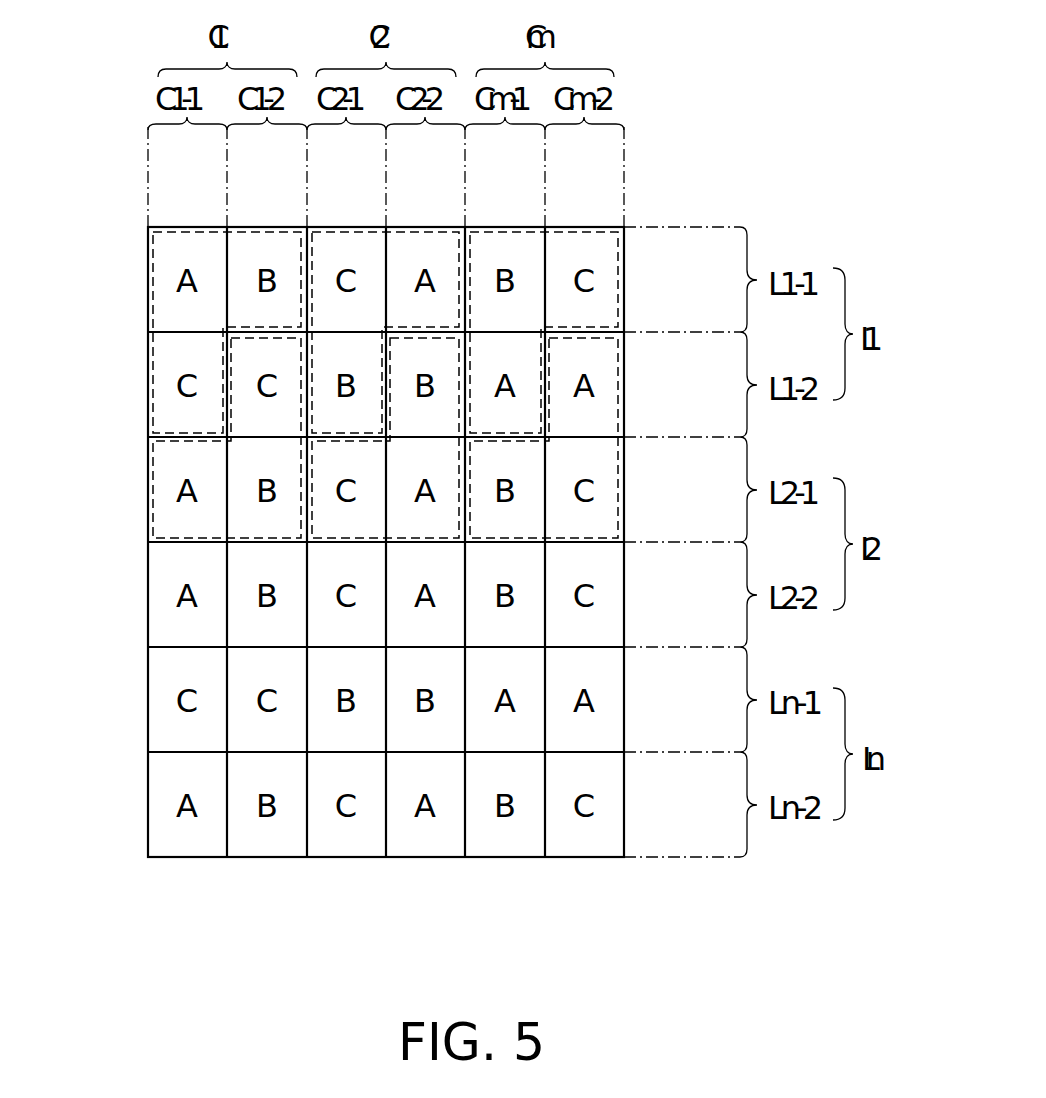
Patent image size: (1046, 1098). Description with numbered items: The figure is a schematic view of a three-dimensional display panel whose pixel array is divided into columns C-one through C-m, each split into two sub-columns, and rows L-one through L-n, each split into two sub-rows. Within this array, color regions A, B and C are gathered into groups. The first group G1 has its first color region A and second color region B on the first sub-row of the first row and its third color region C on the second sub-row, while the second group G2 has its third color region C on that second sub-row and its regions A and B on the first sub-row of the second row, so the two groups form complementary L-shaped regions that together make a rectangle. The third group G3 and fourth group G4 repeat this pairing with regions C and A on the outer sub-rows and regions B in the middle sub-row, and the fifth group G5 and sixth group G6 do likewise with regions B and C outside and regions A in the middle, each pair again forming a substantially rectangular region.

The first group G1 is at (149, 265).
The second group G2 is at (150, 476).
The third group G3 is at (348, 228).
The fourth group G4 is at (342, 547).
The fifth group G5 is at (624, 268).
The sixth group G6 is at (624, 478).